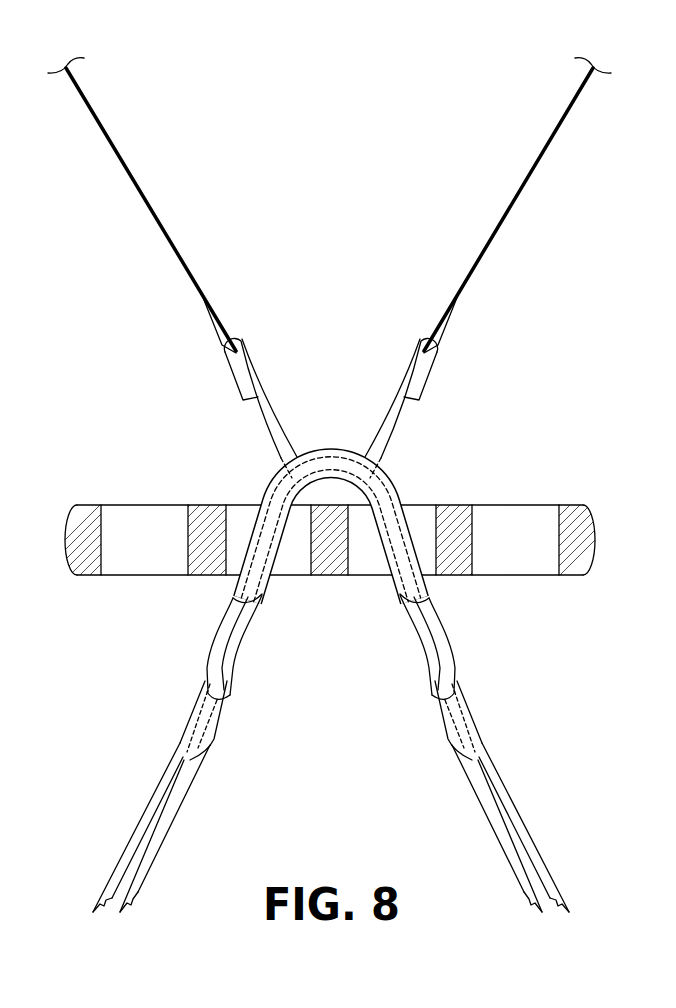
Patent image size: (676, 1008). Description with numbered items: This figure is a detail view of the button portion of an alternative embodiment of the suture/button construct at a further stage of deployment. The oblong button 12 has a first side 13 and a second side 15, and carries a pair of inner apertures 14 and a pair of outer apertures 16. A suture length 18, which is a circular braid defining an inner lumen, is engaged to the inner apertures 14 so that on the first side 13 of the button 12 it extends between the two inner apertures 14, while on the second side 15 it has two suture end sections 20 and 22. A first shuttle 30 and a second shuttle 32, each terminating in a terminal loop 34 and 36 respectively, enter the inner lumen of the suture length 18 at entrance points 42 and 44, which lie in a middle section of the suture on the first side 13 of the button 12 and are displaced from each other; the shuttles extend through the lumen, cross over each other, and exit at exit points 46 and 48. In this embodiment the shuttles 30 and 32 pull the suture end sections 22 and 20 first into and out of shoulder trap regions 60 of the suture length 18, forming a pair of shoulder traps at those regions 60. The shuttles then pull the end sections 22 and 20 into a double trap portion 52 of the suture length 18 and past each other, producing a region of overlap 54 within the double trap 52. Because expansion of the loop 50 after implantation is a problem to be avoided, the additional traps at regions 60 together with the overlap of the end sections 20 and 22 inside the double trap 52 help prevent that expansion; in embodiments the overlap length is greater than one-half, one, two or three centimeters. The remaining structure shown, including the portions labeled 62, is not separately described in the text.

The oblong button 12 is at (595, 538).
The first side 13 is at (92, 505).
The second side 15 is at (566, 577).
The outer apertures 16 is at (147, 520).
The inner apertures 14 is at (290, 565).
The double trap portion 52 is at (396, 478).
The suture length 18 is at (319, 446).
The region of overlap 54 is at (346, 446).
The entrance point 42 is at (281, 448).
The entrance point 44 is at (382, 448).
The suture end section 22 is at (230, 378).
The suture end section 20 is at (430, 378).
The first shuttle 30 is at (130, 175).
The second shuttle 32 is at (529, 176).
The terminal loop 34 is at (213, 328).
The terminal loop 36 is at (449, 330).
The sleeve 62 is at (213, 637).
The shoulder trap regions 60 is at (218, 730).
The exit point 48 is at (180, 747).
The exit point 46 is at (480, 748).
The loop 50 is at (493, 838).